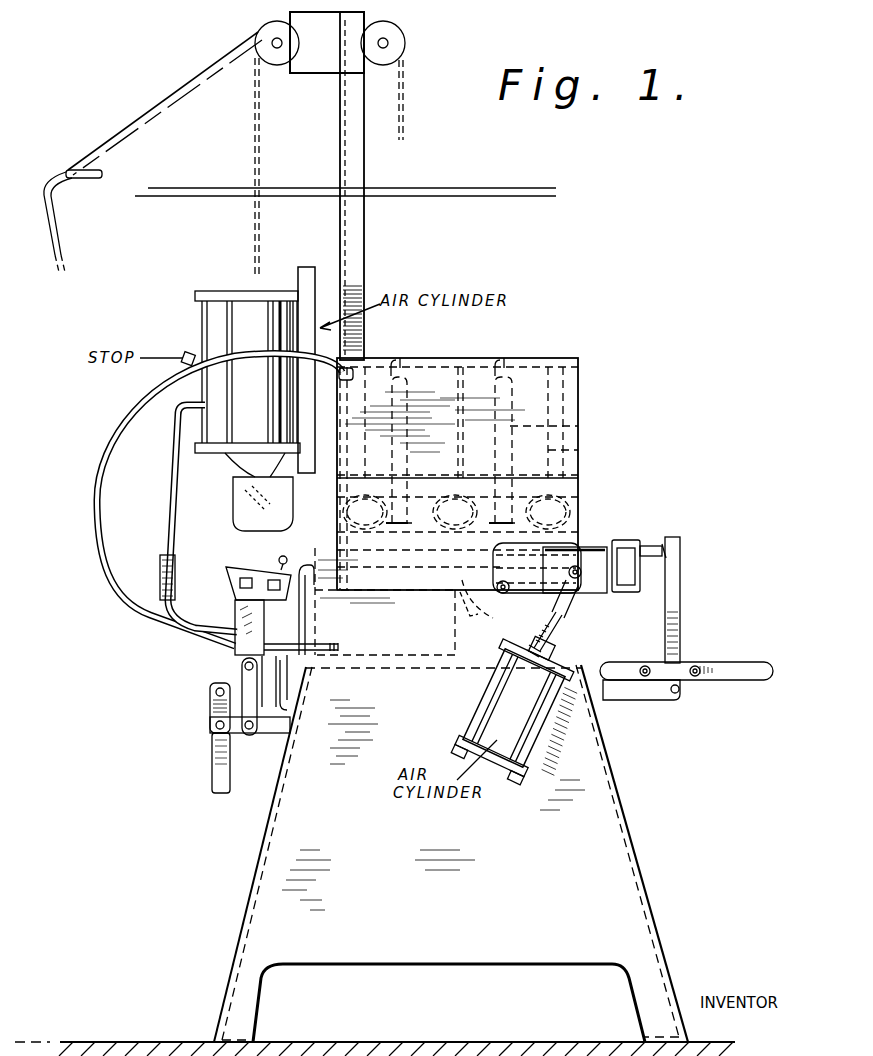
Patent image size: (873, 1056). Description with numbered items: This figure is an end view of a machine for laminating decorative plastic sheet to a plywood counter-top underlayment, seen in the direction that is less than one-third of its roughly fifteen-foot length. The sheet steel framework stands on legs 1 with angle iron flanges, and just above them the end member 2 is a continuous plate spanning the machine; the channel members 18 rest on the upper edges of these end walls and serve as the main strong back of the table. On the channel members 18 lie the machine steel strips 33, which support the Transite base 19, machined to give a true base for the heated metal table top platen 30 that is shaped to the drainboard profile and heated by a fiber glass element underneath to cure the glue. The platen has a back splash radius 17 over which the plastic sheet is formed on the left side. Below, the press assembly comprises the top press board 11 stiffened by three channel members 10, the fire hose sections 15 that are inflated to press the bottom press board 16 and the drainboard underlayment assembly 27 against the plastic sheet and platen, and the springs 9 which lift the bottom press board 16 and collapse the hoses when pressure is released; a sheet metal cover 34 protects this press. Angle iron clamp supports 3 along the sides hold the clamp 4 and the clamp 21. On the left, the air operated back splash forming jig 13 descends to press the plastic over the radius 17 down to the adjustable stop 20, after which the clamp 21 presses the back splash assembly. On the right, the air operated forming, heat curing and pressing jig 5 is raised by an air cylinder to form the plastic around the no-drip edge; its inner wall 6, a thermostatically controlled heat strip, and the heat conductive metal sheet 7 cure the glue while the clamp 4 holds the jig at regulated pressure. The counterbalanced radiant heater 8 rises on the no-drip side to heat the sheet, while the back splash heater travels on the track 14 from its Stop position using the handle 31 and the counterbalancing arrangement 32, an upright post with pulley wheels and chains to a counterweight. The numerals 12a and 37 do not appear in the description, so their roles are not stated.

The legs 1 is at (262, 1003).
The end member 2 is at (270, 820).
The clamp supports 3 is at (242, 662).
The clamp 4 is at (680, 608).
The air operated forming, heat curing and pressing jig 5 is at (599, 583).
The inner wall 6 is at (636, 560).
The heat conductive metal sheet 7 is at (612, 543).
The radiant heater 8 is at (590, 585).
The springs 9 is at (578, 428).
The channel members 10 is at (344, 383).
The top press board 11 is at (575, 490).
The valve lever 12a is at (260, 578).
The back splash forming jig 13 is at (250, 505).
The track 14 is at (100, 546).
The hose sections 15 is at (568, 508).
The bottom press board 16 is at (318, 545).
The back splash radius 17 is at (308, 590).
The channel members 18 is at (345, 658).
The Transite base 19 is at (236, 589).
The stop 20 is at (287, 658).
The clamp 21 is at (211, 757).
The drainboard underlayment assembly 27 is at (428, 570).
The heated metal table top platen 30 is at (495, 602).
The handle 31 is at (174, 478).
The counterbalancing arrangement 32 is at (366, 168).
The machine steel strips 33 is at (480, 615).
The sheet metal cover 34 is at (578, 397).
The swing arm 37 is at (64, 245).